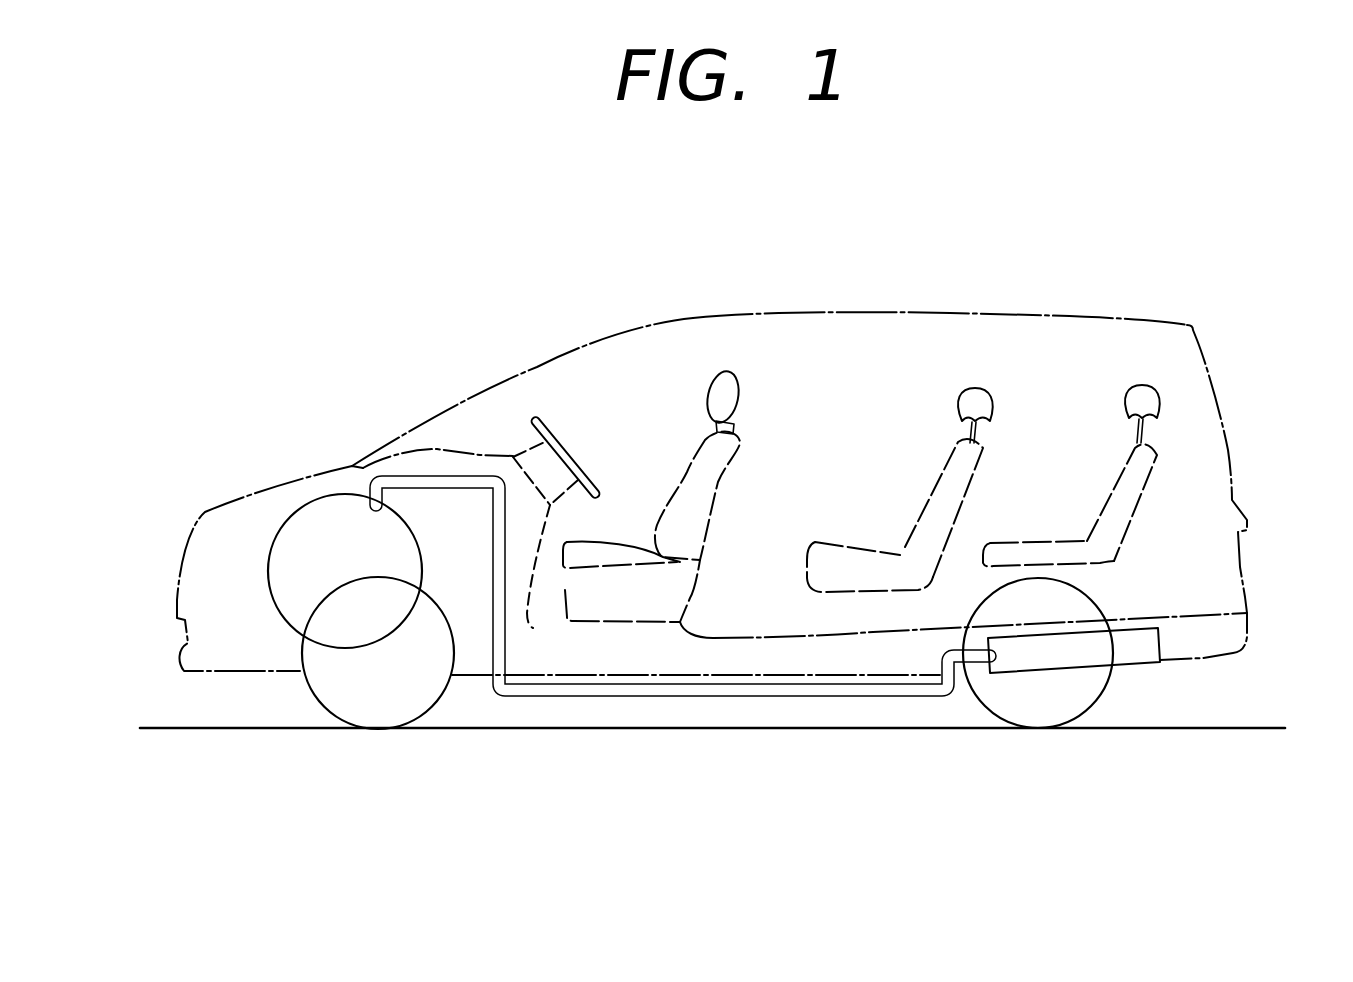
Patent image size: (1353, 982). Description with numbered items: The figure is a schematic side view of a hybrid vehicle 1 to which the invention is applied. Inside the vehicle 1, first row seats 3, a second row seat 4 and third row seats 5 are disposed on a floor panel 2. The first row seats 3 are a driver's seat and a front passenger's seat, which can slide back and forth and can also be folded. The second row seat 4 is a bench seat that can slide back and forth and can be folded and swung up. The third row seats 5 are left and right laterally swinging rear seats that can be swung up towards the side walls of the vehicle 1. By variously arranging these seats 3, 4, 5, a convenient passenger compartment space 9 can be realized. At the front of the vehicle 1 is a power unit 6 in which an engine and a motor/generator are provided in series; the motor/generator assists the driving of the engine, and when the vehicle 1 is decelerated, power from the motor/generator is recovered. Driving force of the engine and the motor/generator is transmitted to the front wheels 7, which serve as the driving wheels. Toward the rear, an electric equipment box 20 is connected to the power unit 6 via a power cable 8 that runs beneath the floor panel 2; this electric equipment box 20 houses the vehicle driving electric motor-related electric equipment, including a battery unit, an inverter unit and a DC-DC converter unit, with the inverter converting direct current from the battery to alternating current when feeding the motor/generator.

The vehicle 1 is at (712, 489).
The floor panel 2 is at (868, 630).
The first row seats 3 is at (692, 465).
The second row seat 4 is at (937, 495).
The third row seats 5 is at (1119, 496).
The power unit 6 is at (305, 503).
The front wheels 7 is at (313, 704).
The power cable 8 is at (721, 699).
The passenger compartment space 9 is at (788, 335).
The electric equipment box 20 is at (1132, 652).